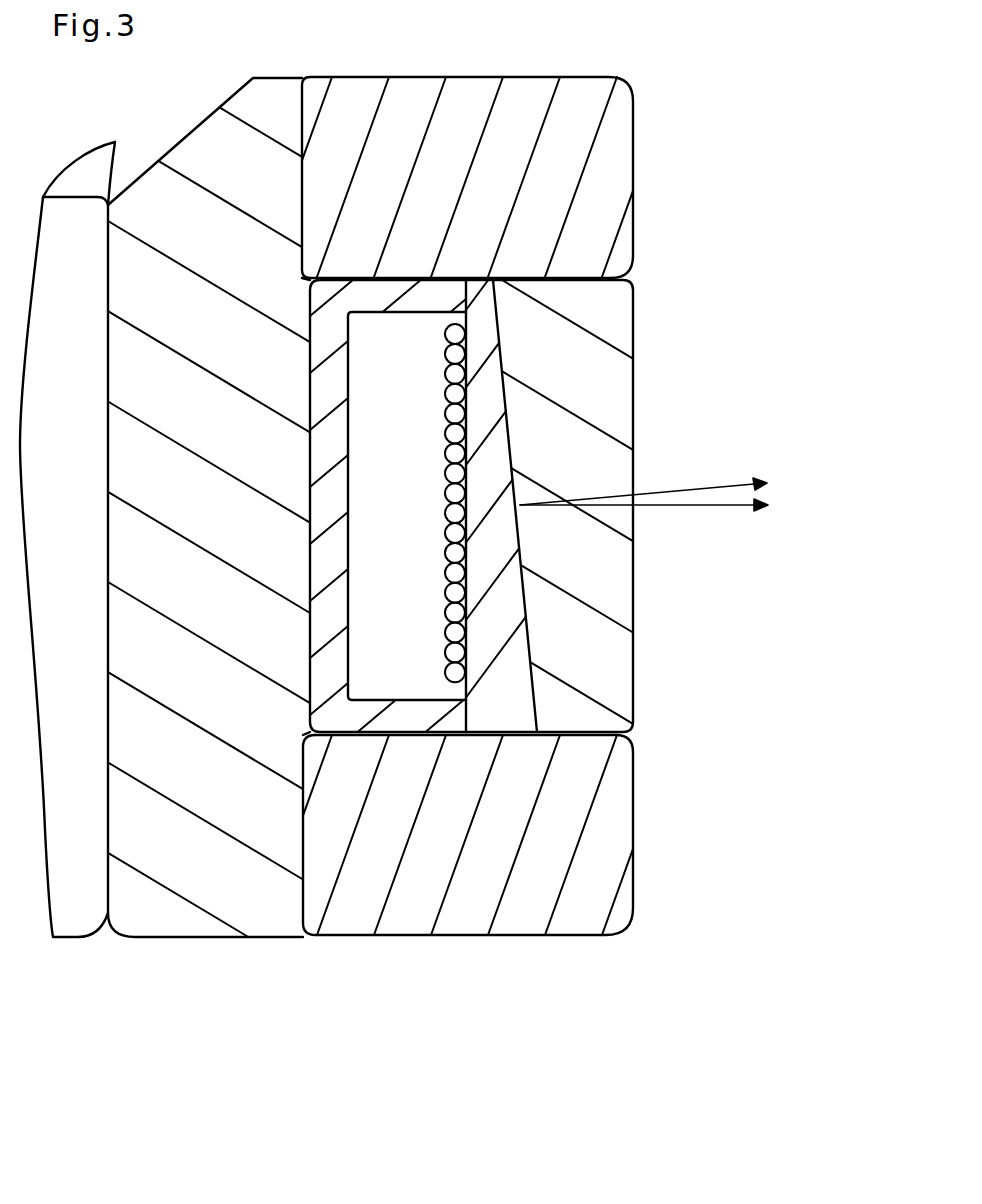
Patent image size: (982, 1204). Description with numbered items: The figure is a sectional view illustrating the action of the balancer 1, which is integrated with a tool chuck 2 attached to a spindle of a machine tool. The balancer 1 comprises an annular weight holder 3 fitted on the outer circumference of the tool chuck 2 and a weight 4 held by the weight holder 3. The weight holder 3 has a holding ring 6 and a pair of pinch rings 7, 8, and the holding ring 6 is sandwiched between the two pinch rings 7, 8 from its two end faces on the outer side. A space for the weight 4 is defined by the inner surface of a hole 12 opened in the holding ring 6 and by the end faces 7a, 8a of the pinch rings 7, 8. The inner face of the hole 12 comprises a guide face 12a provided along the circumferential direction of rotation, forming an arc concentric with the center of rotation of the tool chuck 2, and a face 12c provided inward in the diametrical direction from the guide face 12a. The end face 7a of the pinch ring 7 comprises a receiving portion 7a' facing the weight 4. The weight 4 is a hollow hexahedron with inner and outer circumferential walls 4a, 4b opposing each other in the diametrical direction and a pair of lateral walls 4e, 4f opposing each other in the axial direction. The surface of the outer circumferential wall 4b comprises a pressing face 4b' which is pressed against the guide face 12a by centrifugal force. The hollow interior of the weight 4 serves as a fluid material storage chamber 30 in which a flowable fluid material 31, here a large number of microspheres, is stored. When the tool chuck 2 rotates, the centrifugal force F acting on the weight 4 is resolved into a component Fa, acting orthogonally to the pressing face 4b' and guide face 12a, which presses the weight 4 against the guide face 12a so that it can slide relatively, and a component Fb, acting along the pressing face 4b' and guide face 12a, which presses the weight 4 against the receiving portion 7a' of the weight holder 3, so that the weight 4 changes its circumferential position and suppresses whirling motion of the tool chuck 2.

The balancer 1 is at (637, 125).
The tool chuck 2 is at (82, 913).
The weight holder 3 is at (578, 107).
The weight 4 is at (461, 520).
The inner circumferential wall 4a is at (333, 441).
The outer circumferential wall 4b is at (596, 410).
The pressing face 4b' is at (614, 644).
The lateral wall 4e is at (437, 293).
The lateral wall 4f is at (435, 717).
The holding ring 6 is at (599, 502).
The pinch ring 7 is at (497, 863).
The end face 7a is at (541, 864).
The receiving portion 7a' is at (390, 863).
The pinch ring 8 is at (501, 160).
The end face 8a is at (380, 278).
The hole 12 is at (591, 506).
The guide face 12a is at (520, 603).
The face 12c is at (350, 550).
The fluid material storage chamber 30 is at (416, 489).
The fluid material 31 is at (460, 453).
The centrifugal force F is at (725, 508).
The component of centrifugal force Fa is at (762, 482).
The component of centrifugal force Fb is at (770, 492).